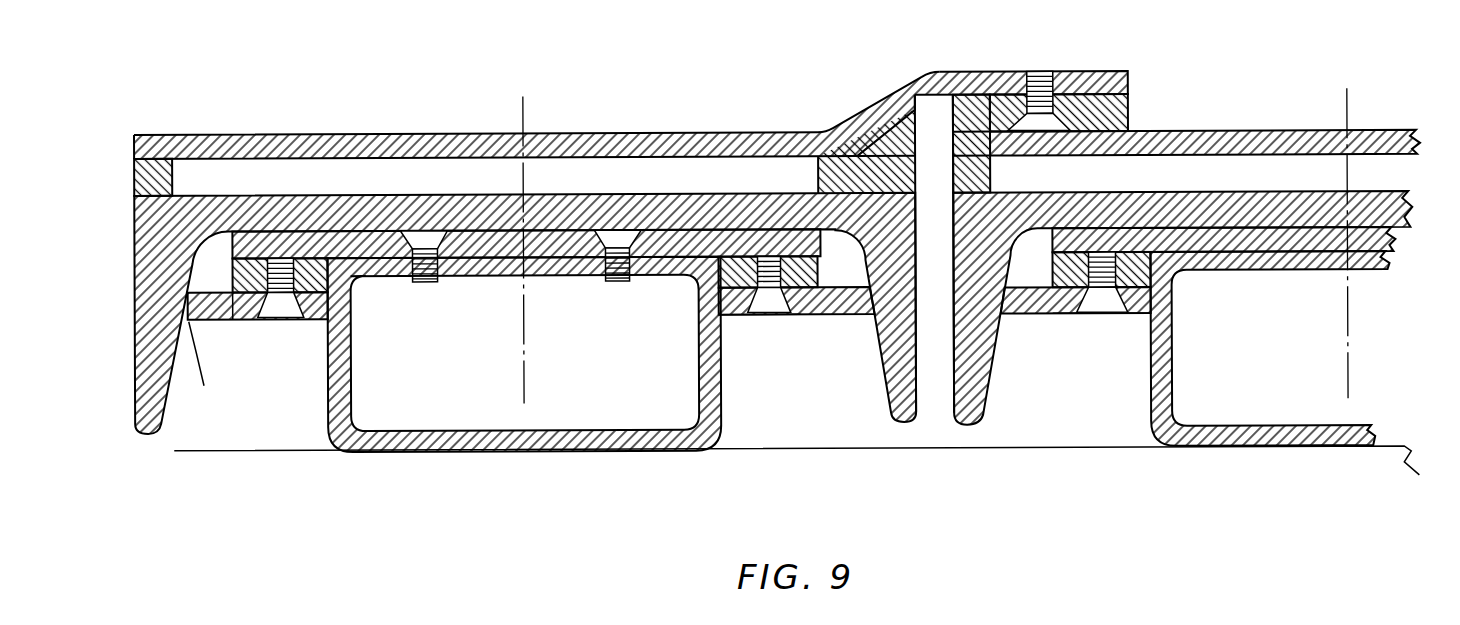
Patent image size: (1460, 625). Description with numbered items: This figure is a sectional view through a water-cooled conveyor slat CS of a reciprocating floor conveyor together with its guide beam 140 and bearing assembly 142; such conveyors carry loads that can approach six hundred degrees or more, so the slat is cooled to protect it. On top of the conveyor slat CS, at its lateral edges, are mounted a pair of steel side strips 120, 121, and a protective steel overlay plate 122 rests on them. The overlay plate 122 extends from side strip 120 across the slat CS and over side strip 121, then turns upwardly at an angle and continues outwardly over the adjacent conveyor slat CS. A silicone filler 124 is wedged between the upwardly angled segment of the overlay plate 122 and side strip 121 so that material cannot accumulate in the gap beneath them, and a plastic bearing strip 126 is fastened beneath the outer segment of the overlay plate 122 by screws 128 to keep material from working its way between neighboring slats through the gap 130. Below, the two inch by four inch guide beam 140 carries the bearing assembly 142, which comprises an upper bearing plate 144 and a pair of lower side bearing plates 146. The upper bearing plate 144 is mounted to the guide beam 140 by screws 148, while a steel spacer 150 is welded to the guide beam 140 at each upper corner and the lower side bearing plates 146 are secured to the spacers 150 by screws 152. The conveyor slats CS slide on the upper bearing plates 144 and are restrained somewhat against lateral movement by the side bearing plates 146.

The side strip 120 is at (136, 183).
The side strip 121 is at (857, 153).
The protective overlay plate 122 is at (683, 143).
The silicone filler 124 is at (938, 110).
The plastic bearing strip 126 is at (1130, 111).
The screw 128 is at (1040, 90).
The gap 130 is at (938, 384).
The guide beam 140 is at (328, 372).
The bearing assembly 142 is at (793, 333).
The upper bearing plate 144 is at (567, 232).
The lower side bearing plate 146 is at (203, 386).
The screw 148 is at (457, 281).
The steel spacer 150 is at (228, 270).
The screw 152 is at (280, 303).
The conveyor slat CS is at (477, 210).